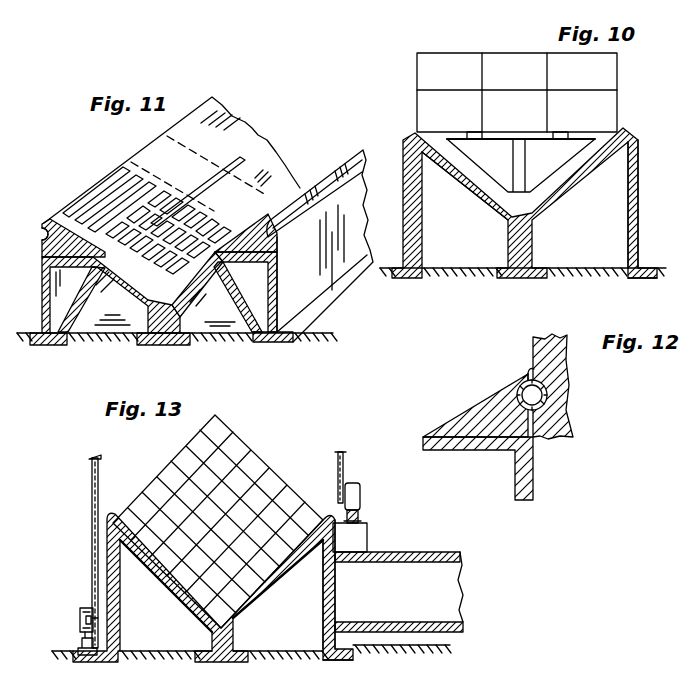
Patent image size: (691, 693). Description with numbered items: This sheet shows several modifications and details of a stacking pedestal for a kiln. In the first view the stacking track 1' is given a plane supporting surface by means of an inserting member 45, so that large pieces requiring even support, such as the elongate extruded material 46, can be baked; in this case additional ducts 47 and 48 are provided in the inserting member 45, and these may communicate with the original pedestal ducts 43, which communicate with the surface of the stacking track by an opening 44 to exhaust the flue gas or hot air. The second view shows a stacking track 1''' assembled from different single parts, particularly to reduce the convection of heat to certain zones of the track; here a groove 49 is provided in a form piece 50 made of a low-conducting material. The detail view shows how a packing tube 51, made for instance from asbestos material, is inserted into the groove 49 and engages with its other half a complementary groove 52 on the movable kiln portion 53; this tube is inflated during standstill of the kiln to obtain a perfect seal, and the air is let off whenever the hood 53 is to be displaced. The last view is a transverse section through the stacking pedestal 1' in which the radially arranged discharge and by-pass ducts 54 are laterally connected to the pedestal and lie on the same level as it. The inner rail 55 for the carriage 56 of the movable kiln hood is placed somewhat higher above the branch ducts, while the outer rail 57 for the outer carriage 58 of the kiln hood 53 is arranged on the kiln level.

In FIG. 10, the stacking pedestal 1' is at (528, 203).
In FIG. 13, the stacking pedestal 1' is at (213, 565).
In FIG. 11, the stacking track 1''' is at (124, 298).
In FIG. 10, the ducts 43 is at (613, 219).
In FIG. 11, the ducts 43 is at (252, 280).
In FIG. 13, the ducts 43 is at (307, 610).
In FIG. 13, the opening 44 is at (163, 571).
In FIG. 10, the inserting member 45 is at (512, 135).
In FIG. 10, the elongate extruded material 46 is at (450, 65).
In FIG. 10, the additional duct 47 is at (536, 173).
In FIG. 10, the additional duct 48 is at (470, 141).
In FIG. 11, the groove 49 is at (41, 235).
In FIG. 12, the groove 49 is at (521, 393).
In FIG. 11, the form piece 50 is at (60, 243).
In FIG. 12, the form piece 50 is at (464, 414).
In FIG. 12, the packing tube 51 is at (526, 386).
In FIG. 12, the complementary groove 52 is at (548, 397).
In FIG. 12, the movable kiln portion 53 is at (556, 344).
In FIG. 13, the movable kiln portion 53 is at (90, 477).
In FIG. 13, the discharge and by-pass ducts 54 is at (415, 571).
In FIG. 13, the inner rail 55 is at (362, 520).
In FIG. 13, the carriage 56 is at (356, 483).
In FIG. 13, the outer rail 57 is at (80, 648).
In FIG. 13, the outer carriage 58 is at (88, 615).